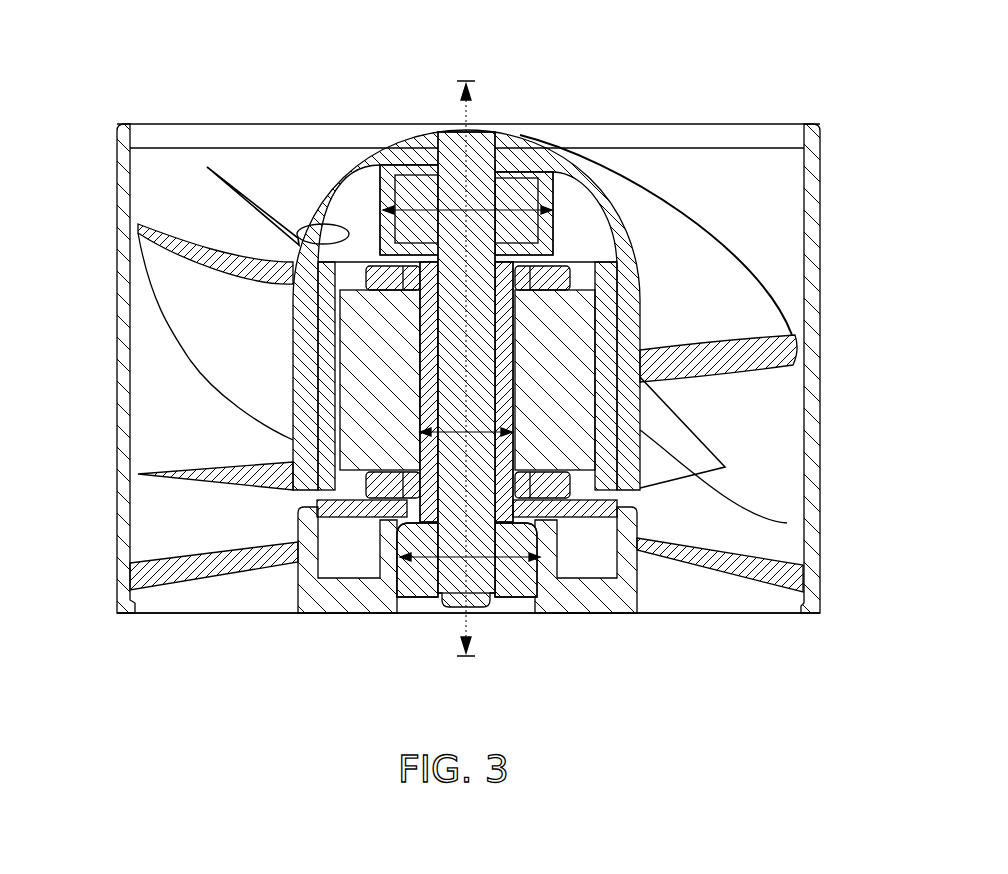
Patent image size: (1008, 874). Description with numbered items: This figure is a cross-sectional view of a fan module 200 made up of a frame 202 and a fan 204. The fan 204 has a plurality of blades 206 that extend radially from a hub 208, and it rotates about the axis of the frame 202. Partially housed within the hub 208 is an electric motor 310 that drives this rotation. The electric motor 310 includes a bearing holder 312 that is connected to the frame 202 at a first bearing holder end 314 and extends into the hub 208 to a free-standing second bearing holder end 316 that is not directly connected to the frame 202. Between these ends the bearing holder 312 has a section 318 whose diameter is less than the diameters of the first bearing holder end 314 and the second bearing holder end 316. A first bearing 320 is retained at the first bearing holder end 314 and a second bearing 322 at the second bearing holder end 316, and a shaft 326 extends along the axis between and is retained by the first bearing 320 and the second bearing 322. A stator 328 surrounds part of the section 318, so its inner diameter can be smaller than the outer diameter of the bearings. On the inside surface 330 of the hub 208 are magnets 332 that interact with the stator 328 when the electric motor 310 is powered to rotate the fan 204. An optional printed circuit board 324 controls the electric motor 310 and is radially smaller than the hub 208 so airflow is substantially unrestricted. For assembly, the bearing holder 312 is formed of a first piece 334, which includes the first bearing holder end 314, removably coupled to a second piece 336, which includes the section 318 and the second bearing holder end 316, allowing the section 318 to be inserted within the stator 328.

The fan module 200 is at (197, 70).
The frame 202 is at (808, 173).
The fan 204 is at (728, 70).
The blades 206 is at (138, 230).
The hub 208 is at (375, 131).
The electric motor 310 is at (575, 578).
The bearing holder 312 is at (540, 590).
The first bearing holder end 314 is at (381, 605).
The second bearing holder end 316 is at (513, 152).
The section 318 is at (380, 368).
The first bearing 320 is at (505, 580).
The second bearing 322 is at (410, 197).
The printed circuit board 324 is at (335, 545).
The shaft 326 is at (457, 580).
The stator 328 is at (725, 467).
The inside surface 330 is at (345, 238).
The magnets 332 is at (787, 523).
The first piece 334 is at (345, 545).
The second piece 336 is at (640, 270).